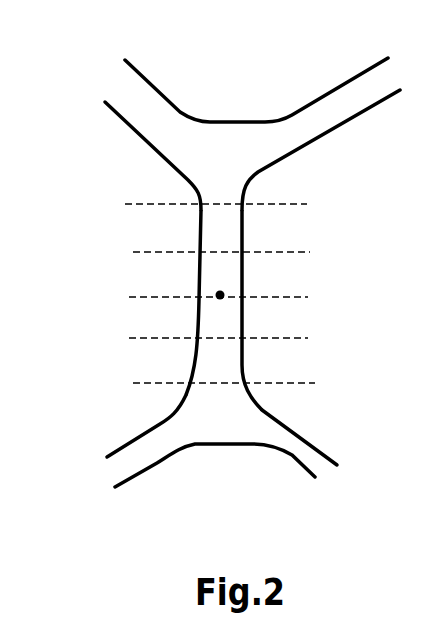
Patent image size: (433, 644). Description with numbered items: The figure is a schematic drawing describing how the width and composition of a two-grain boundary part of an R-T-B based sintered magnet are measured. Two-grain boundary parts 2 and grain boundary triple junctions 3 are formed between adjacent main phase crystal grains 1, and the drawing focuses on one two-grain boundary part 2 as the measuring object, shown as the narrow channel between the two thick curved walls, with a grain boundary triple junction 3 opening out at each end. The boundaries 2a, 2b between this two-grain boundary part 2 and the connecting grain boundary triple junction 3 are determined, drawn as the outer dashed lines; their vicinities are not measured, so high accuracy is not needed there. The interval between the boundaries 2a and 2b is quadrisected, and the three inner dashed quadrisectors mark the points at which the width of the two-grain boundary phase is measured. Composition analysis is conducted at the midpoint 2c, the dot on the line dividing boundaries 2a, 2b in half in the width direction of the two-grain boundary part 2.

The R2T14B main phase crystal grain 1 is at (411, 268).
The two-grain boundary part 2 is at (210, 272).
The boundary 2a is at (122, 205).
The boundary 2b is at (132, 383).
The midpoint 2c is at (224, 295).
The grain boundary triple junction 3 is at (228, 143).